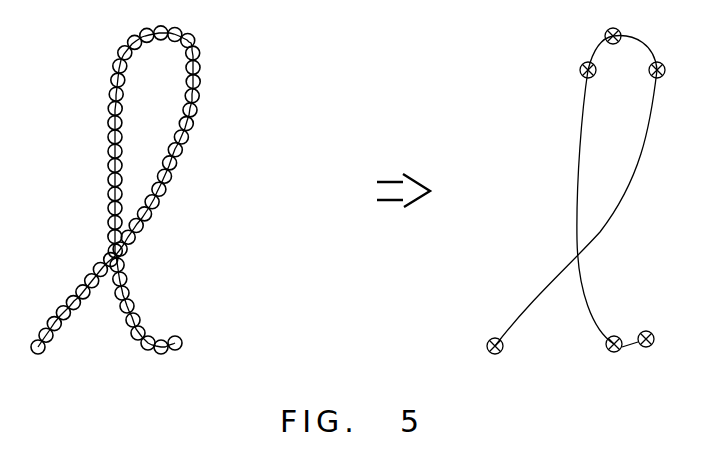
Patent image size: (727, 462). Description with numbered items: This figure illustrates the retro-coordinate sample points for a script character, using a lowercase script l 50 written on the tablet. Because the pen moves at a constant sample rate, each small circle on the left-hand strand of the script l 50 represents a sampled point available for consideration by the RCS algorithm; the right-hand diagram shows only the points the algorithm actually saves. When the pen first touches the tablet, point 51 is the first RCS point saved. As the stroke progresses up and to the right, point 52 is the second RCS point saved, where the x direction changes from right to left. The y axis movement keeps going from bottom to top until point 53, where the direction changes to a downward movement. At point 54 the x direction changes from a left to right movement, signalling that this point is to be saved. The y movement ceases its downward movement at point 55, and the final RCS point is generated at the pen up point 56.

The lowercase script l 50 is at (202, 47).
The first RCS point 51 is at (493, 337).
The second RCS point 52 is at (665, 75).
The y direction change point 53 is at (605, 35).
The x direction change point 54 is at (580, 72).
The y downward cessation point 55 is at (613, 335).
The pen up point 56 is at (647, 332).